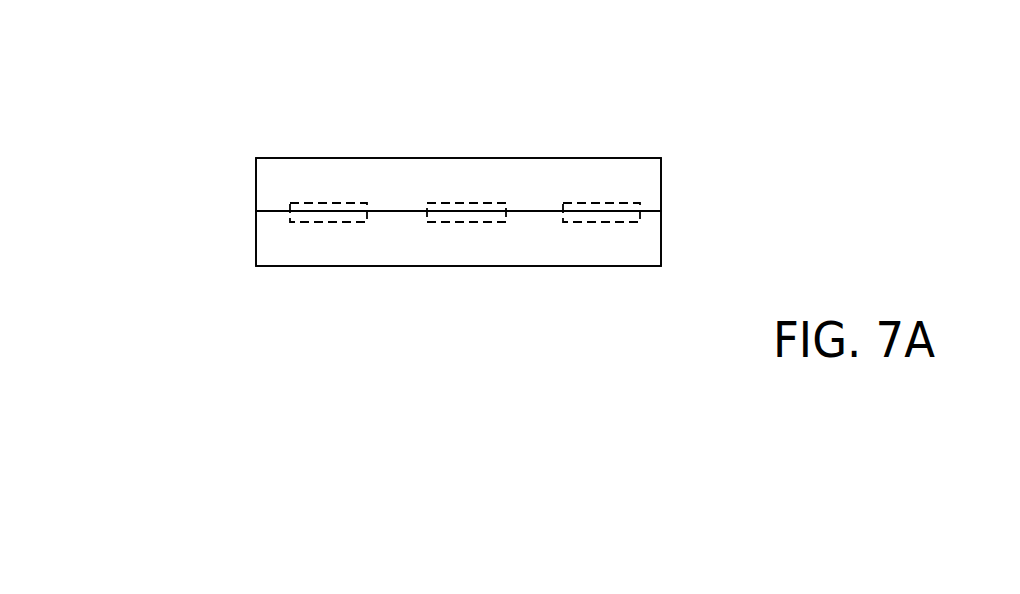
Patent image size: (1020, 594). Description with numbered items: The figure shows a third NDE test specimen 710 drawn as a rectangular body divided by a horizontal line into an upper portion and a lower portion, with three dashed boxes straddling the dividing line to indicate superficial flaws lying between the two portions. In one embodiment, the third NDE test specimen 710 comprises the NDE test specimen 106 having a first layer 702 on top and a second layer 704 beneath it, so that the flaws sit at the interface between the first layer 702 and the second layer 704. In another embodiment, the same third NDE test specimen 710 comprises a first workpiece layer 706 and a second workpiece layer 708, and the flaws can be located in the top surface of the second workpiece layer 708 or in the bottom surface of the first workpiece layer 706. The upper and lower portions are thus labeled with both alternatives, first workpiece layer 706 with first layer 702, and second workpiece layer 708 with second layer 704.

The NDE test specimen 106 is at (560, 143).
The third NDE test specimen 710 is at (667, 99).
The first workpiece layer 706 is at (344, 137).
The first layer 702 is at (280, 184).
The second workpiece layer 708 is at (347, 282).
The second layer 704 is at (280, 247).